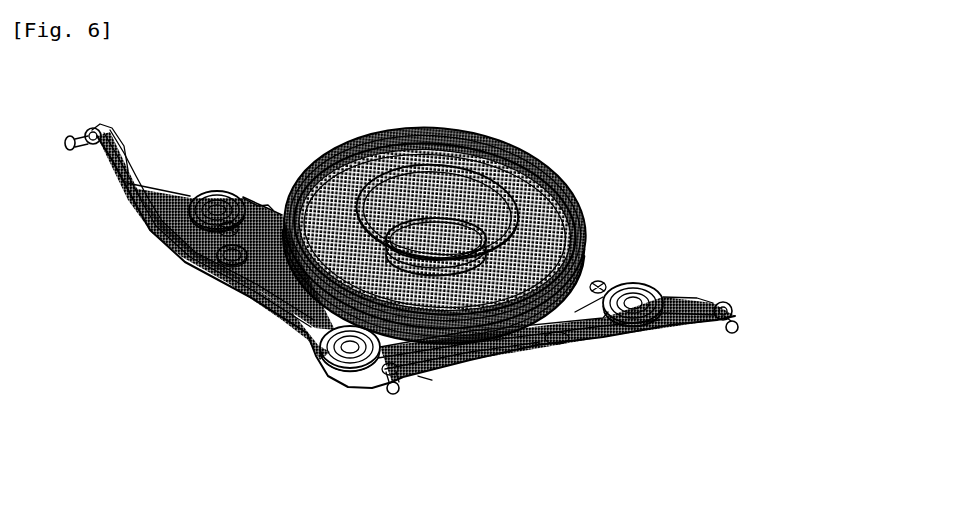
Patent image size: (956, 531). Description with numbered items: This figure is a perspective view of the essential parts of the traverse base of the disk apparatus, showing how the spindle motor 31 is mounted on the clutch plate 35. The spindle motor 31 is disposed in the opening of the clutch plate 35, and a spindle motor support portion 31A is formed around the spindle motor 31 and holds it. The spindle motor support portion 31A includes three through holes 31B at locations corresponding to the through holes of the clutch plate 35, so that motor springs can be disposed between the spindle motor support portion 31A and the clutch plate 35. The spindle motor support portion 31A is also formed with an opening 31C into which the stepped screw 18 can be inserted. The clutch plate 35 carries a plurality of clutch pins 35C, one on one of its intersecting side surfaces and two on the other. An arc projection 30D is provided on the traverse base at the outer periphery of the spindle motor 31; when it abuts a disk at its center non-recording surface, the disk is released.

The spindle motor 31 is at (553, 226).
The spindle motor support portion 31A is at (607, 343).
The through holes 31B is at (216, 204).
The opening 31C is at (240, 264).
The stepped screw 18 is at (243, 202).
The clutch plate 35 is at (190, 246).
The clutch pins 35C is at (77, 150).
The arc projection 30D is at (425, 380).